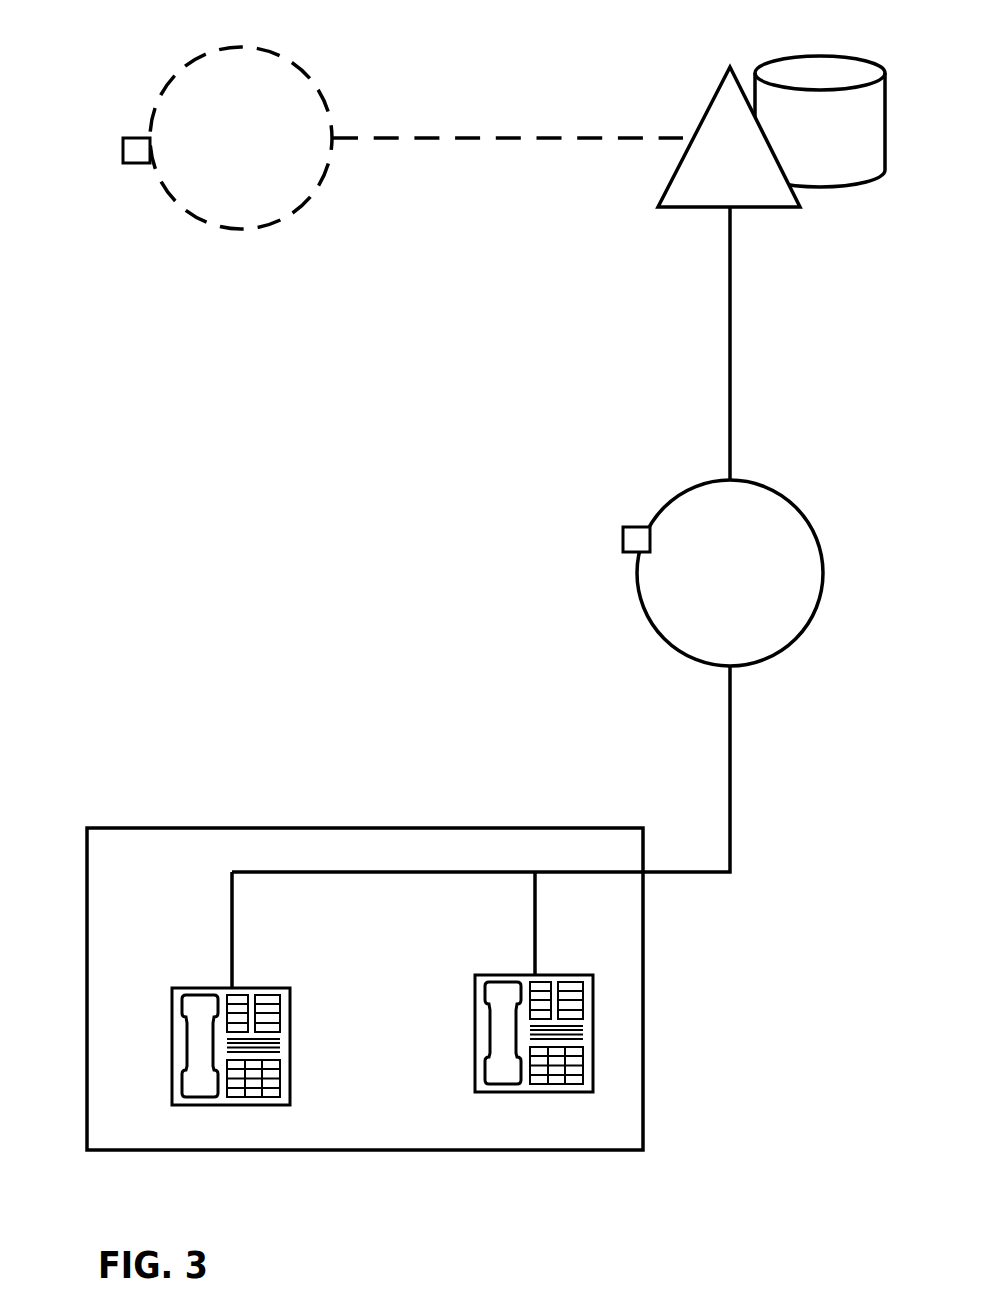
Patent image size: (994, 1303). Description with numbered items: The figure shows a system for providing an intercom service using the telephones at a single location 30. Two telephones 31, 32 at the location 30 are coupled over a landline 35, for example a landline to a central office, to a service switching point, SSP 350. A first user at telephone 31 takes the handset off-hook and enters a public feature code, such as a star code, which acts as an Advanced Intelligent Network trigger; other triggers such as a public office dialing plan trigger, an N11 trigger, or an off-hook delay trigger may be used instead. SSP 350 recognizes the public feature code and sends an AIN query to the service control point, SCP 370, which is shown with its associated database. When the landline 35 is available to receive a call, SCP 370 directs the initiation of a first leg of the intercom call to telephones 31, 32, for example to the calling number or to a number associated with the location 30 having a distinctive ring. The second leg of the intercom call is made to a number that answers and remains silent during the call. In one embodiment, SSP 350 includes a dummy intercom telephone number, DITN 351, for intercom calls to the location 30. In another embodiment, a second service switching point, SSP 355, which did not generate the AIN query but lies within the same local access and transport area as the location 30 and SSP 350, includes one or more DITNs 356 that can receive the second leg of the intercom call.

The location 30 is at (178, 828).
The telephone 31 is at (172, 1040).
The telephone 32 is at (475, 1038).
The landline 35 is at (733, 774).
The SSP 350 is at (782, 494).
The DITN 351 is at (623, 528).
The SSP 355 is at (238, 46).
The DITNs 356 is at (123, 138).
The SCP 370 is at (712, 97).